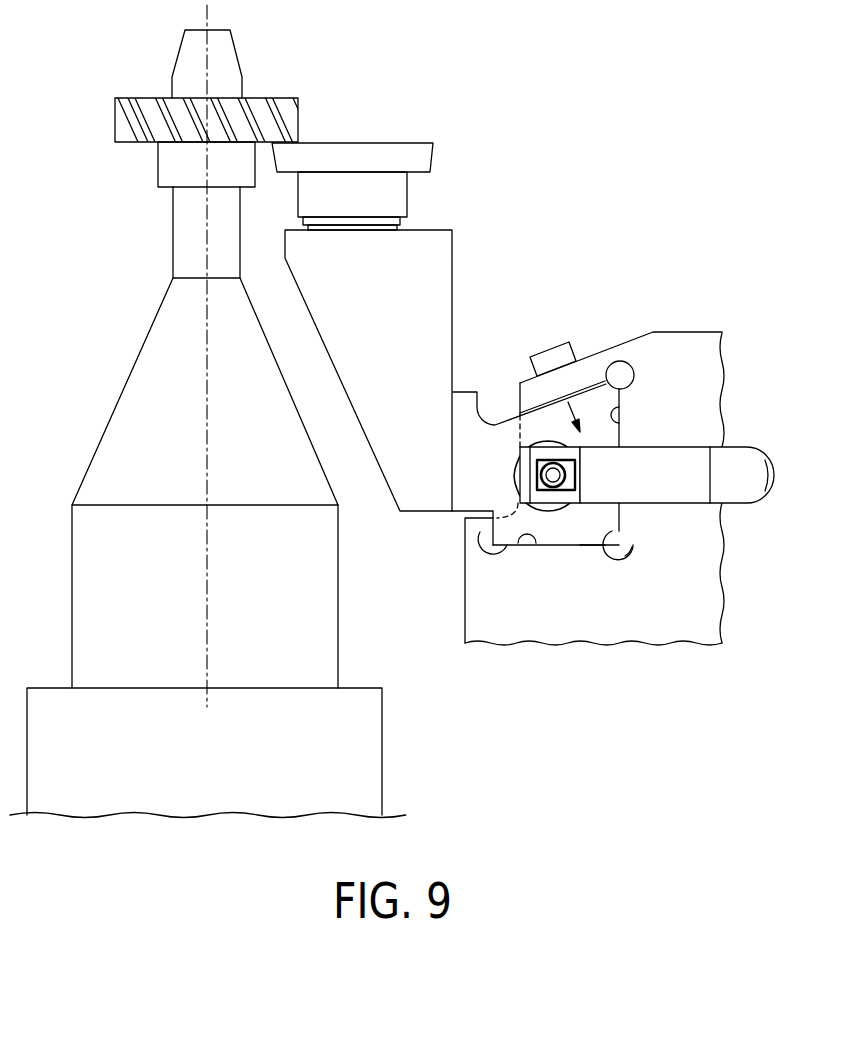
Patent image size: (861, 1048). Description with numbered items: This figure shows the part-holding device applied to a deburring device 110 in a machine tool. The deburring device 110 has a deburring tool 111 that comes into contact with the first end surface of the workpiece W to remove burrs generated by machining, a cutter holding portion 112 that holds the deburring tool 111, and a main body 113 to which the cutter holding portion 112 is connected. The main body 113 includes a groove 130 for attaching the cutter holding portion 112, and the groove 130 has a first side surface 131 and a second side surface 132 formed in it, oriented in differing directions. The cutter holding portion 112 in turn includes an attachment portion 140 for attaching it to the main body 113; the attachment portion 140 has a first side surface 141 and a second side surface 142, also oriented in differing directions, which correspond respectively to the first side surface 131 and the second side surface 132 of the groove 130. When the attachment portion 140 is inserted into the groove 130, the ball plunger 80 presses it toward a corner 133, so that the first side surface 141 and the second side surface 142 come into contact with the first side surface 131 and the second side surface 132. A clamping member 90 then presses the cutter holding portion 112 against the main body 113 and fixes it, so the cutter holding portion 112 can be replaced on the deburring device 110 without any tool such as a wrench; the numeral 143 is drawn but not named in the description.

The workpiece W is at (112, 118).
The ball plunger 80 is at (547, 350).
The clamping member 90 is at (685, 447).
The deburring device 110 is at (523, 396).
The deburring tool 111 is at (435, 155).
The cutter holding portion 112 is at (453, 263).
The main body 113 is at (685, 333).
The groove 130 is at (573, 527).
The first side surface 131 is at (620, 405).
The second side surface 132 is at (520, 538).
The corner 133 is at (618, 528).
The attachment portion 140 is at (557, 523).
The first side surface 141 is at (620, 444).
The second side surface 142 is at (592, 547).
The third protrusion 143 is at (630, 551).